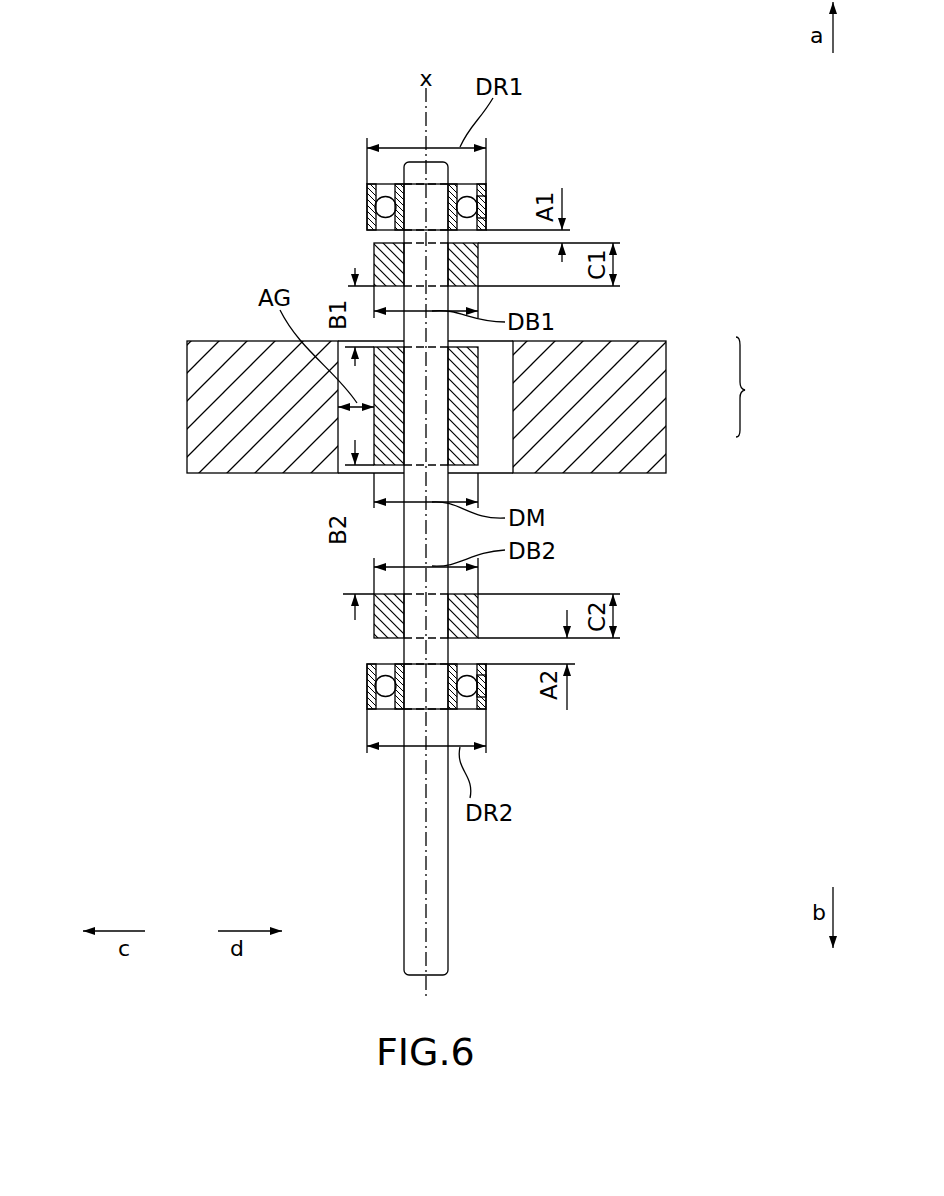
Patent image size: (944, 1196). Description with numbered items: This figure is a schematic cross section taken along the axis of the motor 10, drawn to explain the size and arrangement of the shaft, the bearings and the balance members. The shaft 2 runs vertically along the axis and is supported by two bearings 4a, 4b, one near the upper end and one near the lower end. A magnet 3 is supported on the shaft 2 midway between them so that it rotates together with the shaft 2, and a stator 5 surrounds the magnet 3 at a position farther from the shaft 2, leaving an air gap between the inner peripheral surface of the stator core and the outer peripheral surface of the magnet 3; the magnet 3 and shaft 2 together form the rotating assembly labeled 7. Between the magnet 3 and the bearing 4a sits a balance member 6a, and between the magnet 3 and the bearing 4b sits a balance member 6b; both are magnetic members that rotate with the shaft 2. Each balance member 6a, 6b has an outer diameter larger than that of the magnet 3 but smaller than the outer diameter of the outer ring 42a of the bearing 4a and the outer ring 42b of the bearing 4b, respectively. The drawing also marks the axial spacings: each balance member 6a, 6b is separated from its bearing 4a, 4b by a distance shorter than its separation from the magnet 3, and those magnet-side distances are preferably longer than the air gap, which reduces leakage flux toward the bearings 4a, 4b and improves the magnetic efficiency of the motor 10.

The shaft 2 is at (437, 378).
The magnet 3 is at (470, 412).
The rotor 7 is at (749, 387).
The stator 5 is at (176, 378).
The bearing 4a is at (492, 181).
The outer ring 42a is at (486, 202).
The bearing 4b is at (492, 712).
The outer ring 42b is at (487, 693).
The balance member 6a is at (373, 262).
The balance member 6b is at (373, 616).
The motor 10 is at (735, 168).